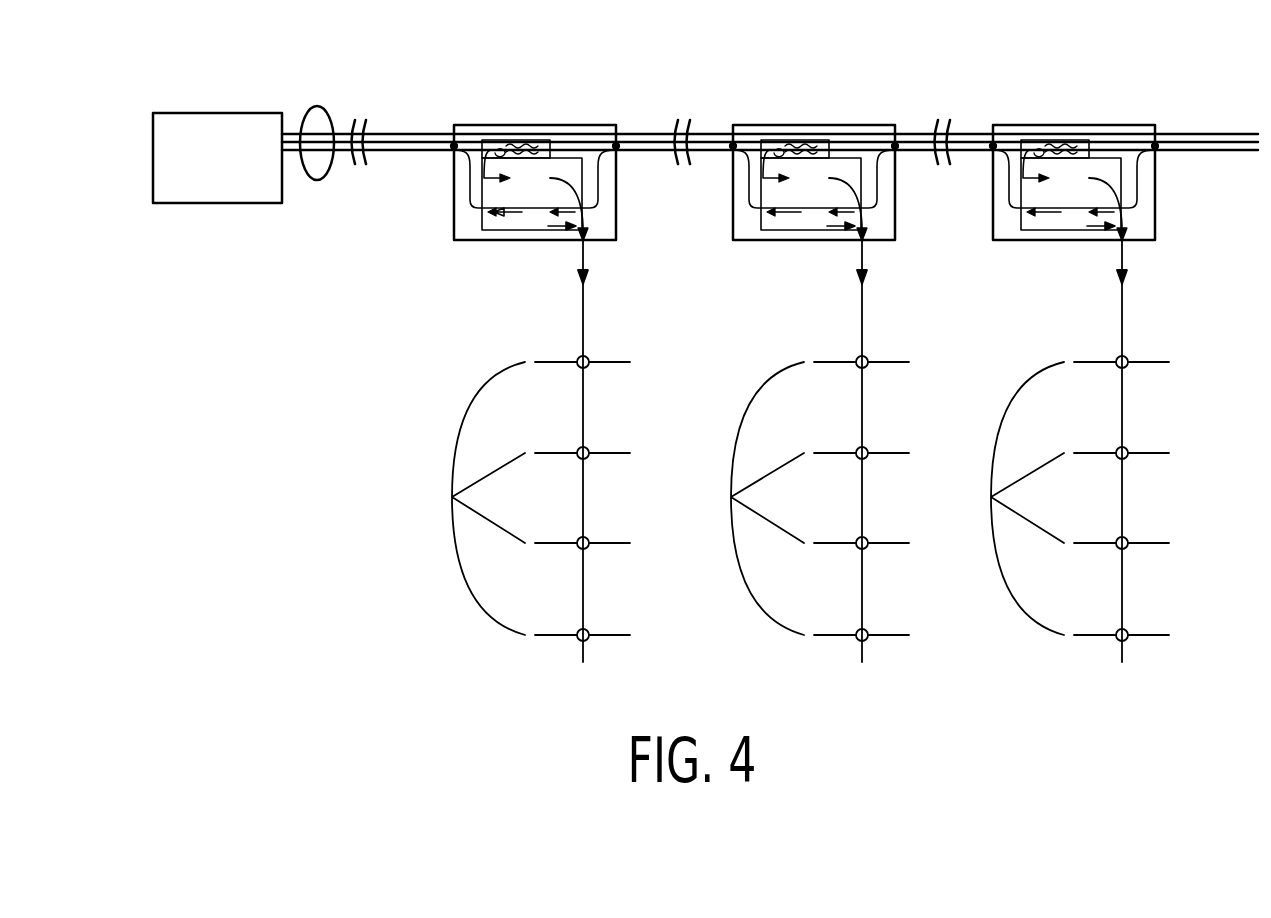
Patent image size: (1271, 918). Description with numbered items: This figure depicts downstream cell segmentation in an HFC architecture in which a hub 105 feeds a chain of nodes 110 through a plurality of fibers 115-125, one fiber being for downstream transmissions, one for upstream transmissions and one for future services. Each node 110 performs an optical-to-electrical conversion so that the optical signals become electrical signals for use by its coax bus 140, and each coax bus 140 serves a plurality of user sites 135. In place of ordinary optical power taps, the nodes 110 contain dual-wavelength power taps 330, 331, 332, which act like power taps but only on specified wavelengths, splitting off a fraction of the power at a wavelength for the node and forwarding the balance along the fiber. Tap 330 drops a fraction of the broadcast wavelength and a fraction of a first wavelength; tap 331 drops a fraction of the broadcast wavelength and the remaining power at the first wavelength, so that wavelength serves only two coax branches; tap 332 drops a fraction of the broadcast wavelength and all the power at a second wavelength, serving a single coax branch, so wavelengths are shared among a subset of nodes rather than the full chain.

The hub 105 is at (193, 112).
The fibers 115-125 is at (314, 105).
The dual-wavelength power tap 330 is at (517, 140).
The dual-wavelength power tap 331 is at (805, 142).
The dual-wavelength power tap 332 is at (1070, 142).
The node 110 is at (454, 221).
The coax bus 140 is at (583, 295).
The user sites 135 is at (452, 497).